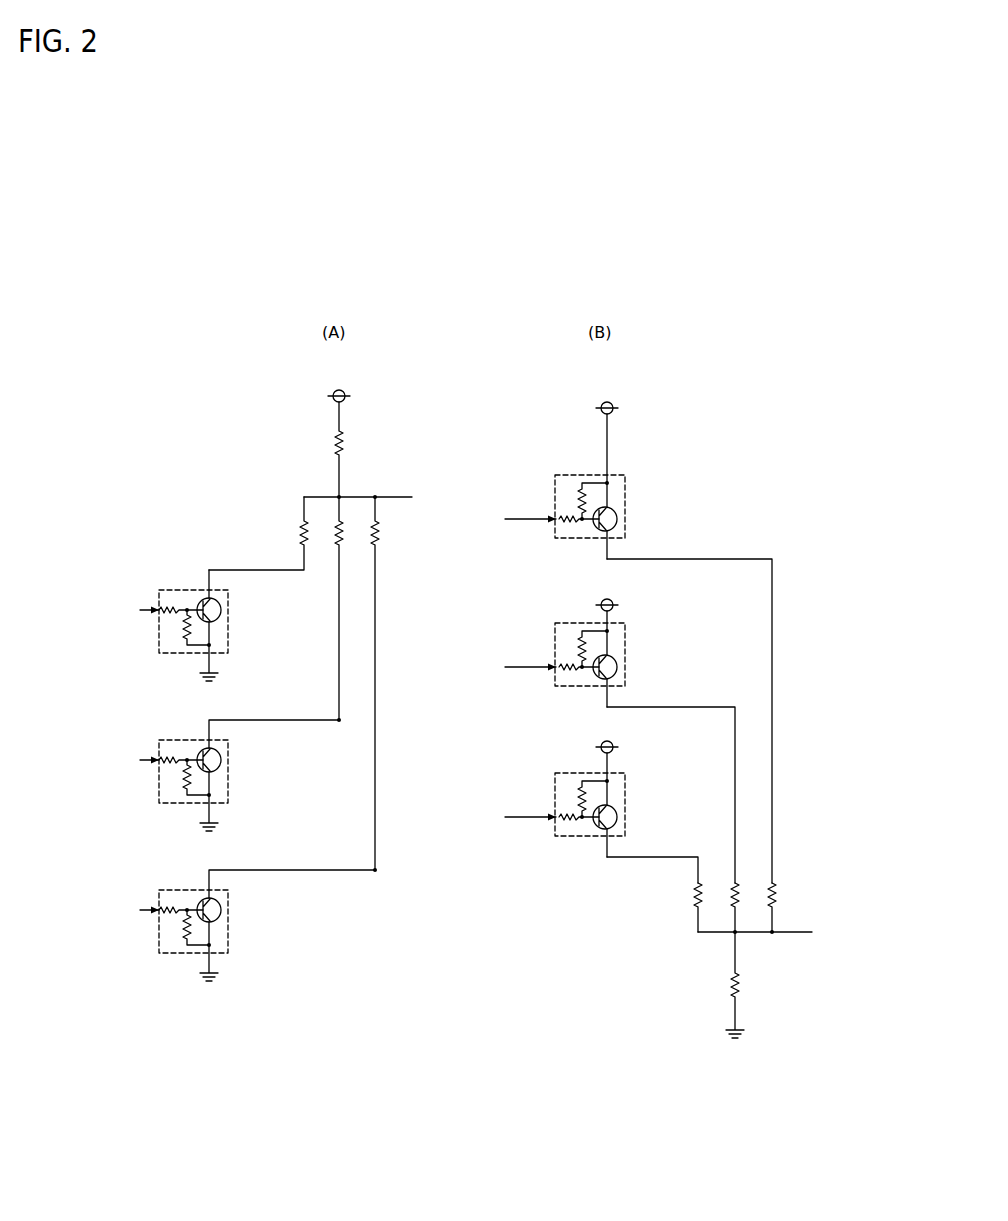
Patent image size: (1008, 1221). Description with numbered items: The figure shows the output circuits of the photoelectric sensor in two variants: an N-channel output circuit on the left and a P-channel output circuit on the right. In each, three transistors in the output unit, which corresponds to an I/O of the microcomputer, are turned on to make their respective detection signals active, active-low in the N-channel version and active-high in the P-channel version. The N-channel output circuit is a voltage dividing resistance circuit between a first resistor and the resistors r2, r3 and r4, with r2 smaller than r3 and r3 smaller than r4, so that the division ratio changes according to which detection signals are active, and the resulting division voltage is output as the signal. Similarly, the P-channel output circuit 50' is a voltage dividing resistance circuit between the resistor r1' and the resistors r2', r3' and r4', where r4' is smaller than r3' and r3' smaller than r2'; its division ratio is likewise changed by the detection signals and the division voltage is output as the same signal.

The output circuit for P-channel 50' is at (780, 871).
The resistor r2 is at (258, 533).
The resistor r3 is at (350, 608).
The resistor r4 is at (387, 683).
The resistor r1' is at (751, 985).
The resistor r2' is at (680, 907).
The resistor r3' is at (748, 897).
The resistor r4' is at (789, 907).